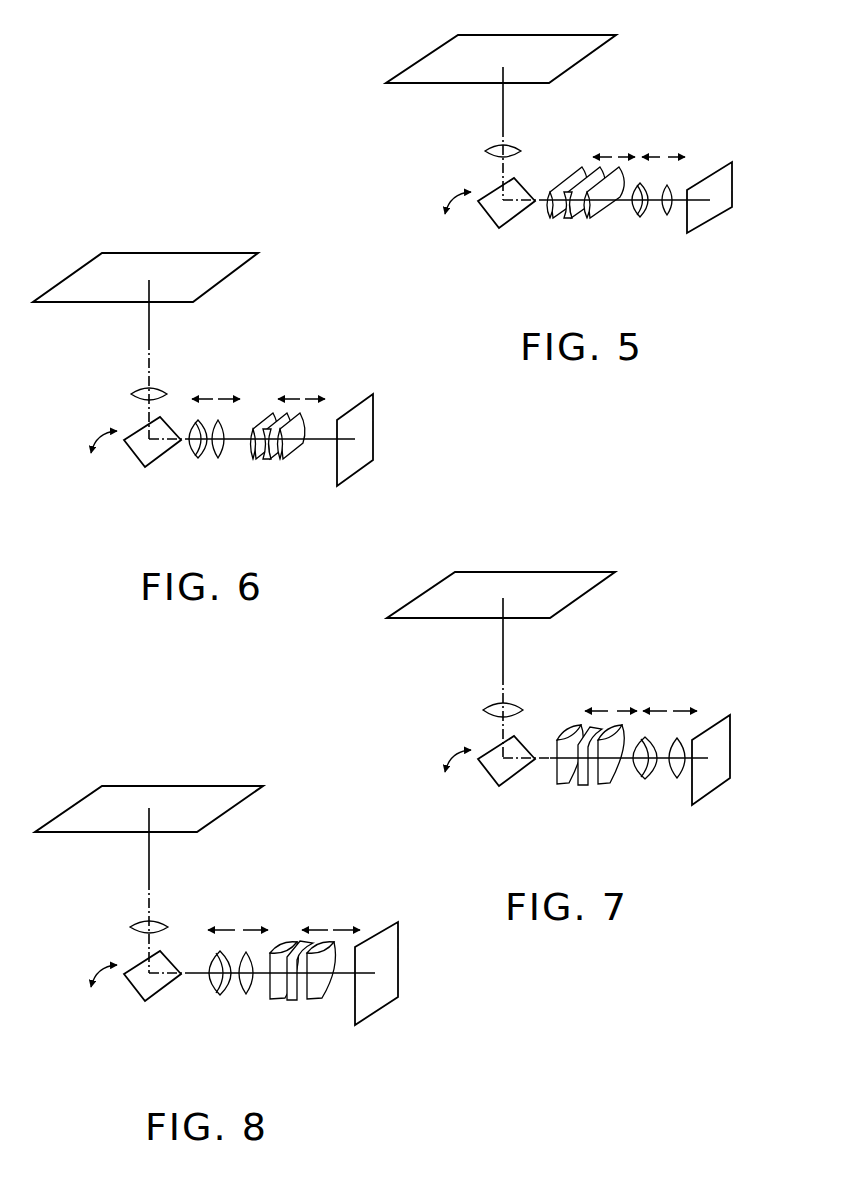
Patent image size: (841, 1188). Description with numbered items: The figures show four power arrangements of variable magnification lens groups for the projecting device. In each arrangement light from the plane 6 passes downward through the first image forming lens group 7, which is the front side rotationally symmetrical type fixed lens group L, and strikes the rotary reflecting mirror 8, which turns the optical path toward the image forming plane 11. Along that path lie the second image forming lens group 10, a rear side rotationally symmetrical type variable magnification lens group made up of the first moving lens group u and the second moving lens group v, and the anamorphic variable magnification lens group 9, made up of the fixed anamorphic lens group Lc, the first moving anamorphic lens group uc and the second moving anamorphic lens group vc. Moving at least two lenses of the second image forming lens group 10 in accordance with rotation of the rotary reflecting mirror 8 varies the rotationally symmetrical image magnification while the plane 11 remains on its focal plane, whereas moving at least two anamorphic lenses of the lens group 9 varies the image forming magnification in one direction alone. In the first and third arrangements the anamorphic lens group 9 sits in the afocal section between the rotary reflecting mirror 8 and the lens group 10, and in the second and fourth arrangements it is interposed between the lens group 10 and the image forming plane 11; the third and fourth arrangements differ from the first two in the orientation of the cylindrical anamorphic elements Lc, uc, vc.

In FIG. 5, the plane 6 is at (592, 50).
In FIG. 6, the plane 6 is at (243, 264).
In FIG. 7, the plane 6 is at (582, 592).
In FIG. 8, the plane 6 is at (230, 807).
In FIG. 5, the first image forming lens group 7 is at (529, 140).
In FIG. 6, the first image forming lens group 7 is at (175, 378).
In FIG. 7, the first image forming lens group 7 is at (530, 697).
In FIG. 8, the first image forming lens group 7 is at (178, 917).
In FIG. 5, the rotary reflecting mirror 8 is at (490, 213).
In FIG. 6, the rotary reflecting mirror 8 is at (135, 457).
In FIG. 7, the rotary reflecting mirror 8 is at (492, 778).
In FIG. 8, the rotary reflecting mirror 8 is at (143, 993).
In FIG. 5, the anamorphic variable magnification lens group 9 is at (581, 228).
In FIG. 6, the anamorphic variable magnification lens group 9 is at (282, 469).
In FIG. 7, the anamorphic variable magnification lens group 9 is at (584, 790).
In FIG. 8, the anamorphic variable magnification lens group 9 is at (310, 1007).
In FIG. 5, the second image forming lens group 10 is at (655, 228).
In FIG. 6, the second image forming lens group 10 is at (203, 469).
In FIG. 7, the second image forming lens group 10 is at (665, 790).
In FIG. 8, the second image forming lens group 10 is at (230, 1007).
In FIG. 5, the plane 11 is at (713, 210).
In FIG. 6, the plane 11 is at (365, 463).
In FIG. 7, the plane 11 is at (727, 738).
In FIG. 8, the plane 11 is at (397, 945).
In FIG. 5, the front side rotationally symmetrical type fixed lens group L is at (517, 148).
In FIG. 6, the front side rotationally symmetrical type fixed lens group L is at (162, 389).
In FIG. 7, the front side rotationally symmetrical type fixed lens group L is at (515, 703).
In FIG. 8, the front side rotationally symmetrical type fixed lens group L is at (165, 925).
In FIG. 5, the fixed anamorphic lens group Lc is at (550, 218).
In FIG. 6, the fixed anamorphic lens group Lc is at (253, 459).
In FIG. 7, the fixed anamorphic lens group Lc is at (562, 783).
In FIG. 8, the fixed anamorphic lens group Lc is at (280, 999).
In FIG. 5, the first moving anamorphic lens group uc is at (568, 218).
In FIG. 6, the first moving anamorphic lens group uc is at (268, 459).
In FIG. 7, the first moving anamorphic lens group uc is at (582, 785).
In FIG. 8, the first moving anamorphic lens group uc is at (293, 1000).
In FIG. 5, the second moving anamorphic lens group vc is at (604, 216).
In FIG. 6, the second moving anamorphic lens group vc is at (302, 459).
In FIG. 7, the second moving anamorphic lens group vc is at (612, 780).
In FIG. 8, the second moving anamorphic lens group vc is at (327, 996).
In FIG. 5, the first moving lens group u is at (640, 217).
In FIG. 6, the first moving lens group u is at (198, 460).
In FIG. 7, the first moving lens group u is at (648, 779).
In FIG. 8, the first moving lens group u is at (220, 997).
In FIG. 5, the second moving lens group v is at (667, 215).
In FIG. 6, the second moving lens group v is at (218, 462).
In FIG. 7, the second moving lens group v is at (677, 778).
In FIG. 8, the second moving lens group v is at (247, 995).